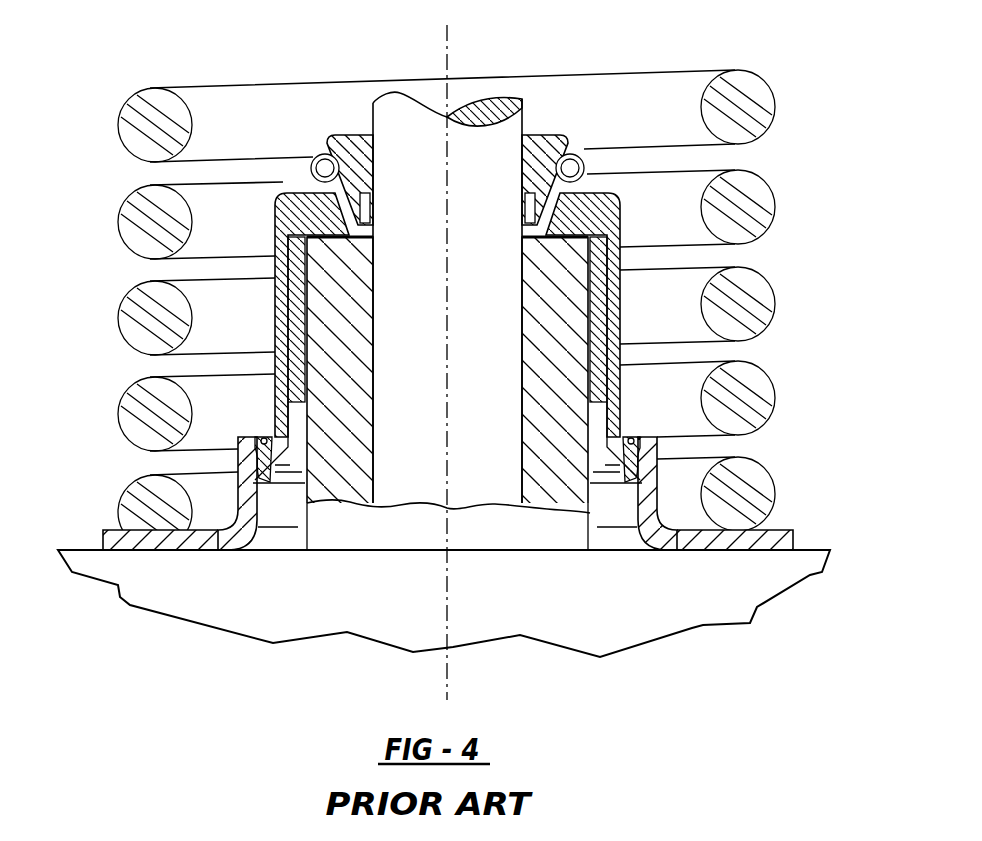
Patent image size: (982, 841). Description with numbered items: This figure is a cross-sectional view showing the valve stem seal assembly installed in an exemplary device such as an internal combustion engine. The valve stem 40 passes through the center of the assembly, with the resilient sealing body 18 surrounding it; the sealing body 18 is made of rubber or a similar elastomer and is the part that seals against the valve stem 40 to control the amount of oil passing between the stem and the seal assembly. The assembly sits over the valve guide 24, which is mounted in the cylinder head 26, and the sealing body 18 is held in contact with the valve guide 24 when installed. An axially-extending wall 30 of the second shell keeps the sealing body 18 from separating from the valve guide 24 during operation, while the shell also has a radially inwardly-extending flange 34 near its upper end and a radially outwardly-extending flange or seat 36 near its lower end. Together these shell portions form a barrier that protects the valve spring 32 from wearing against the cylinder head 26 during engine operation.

The resilient sealing body 18 is at (290, 315).
The valve guide 24 is at (553, 357).
The cylinder head 26 is at (703, 583).
The axially-extending wall 30 is at (658, 480).
The valve spring 32 is at (750, 198).
The radially inwardly-extending flange 34 is at (627, 442).
The radially outwardly-extending flange 36 is at (757, 543).
The valve stem 40 is at (483, 125).